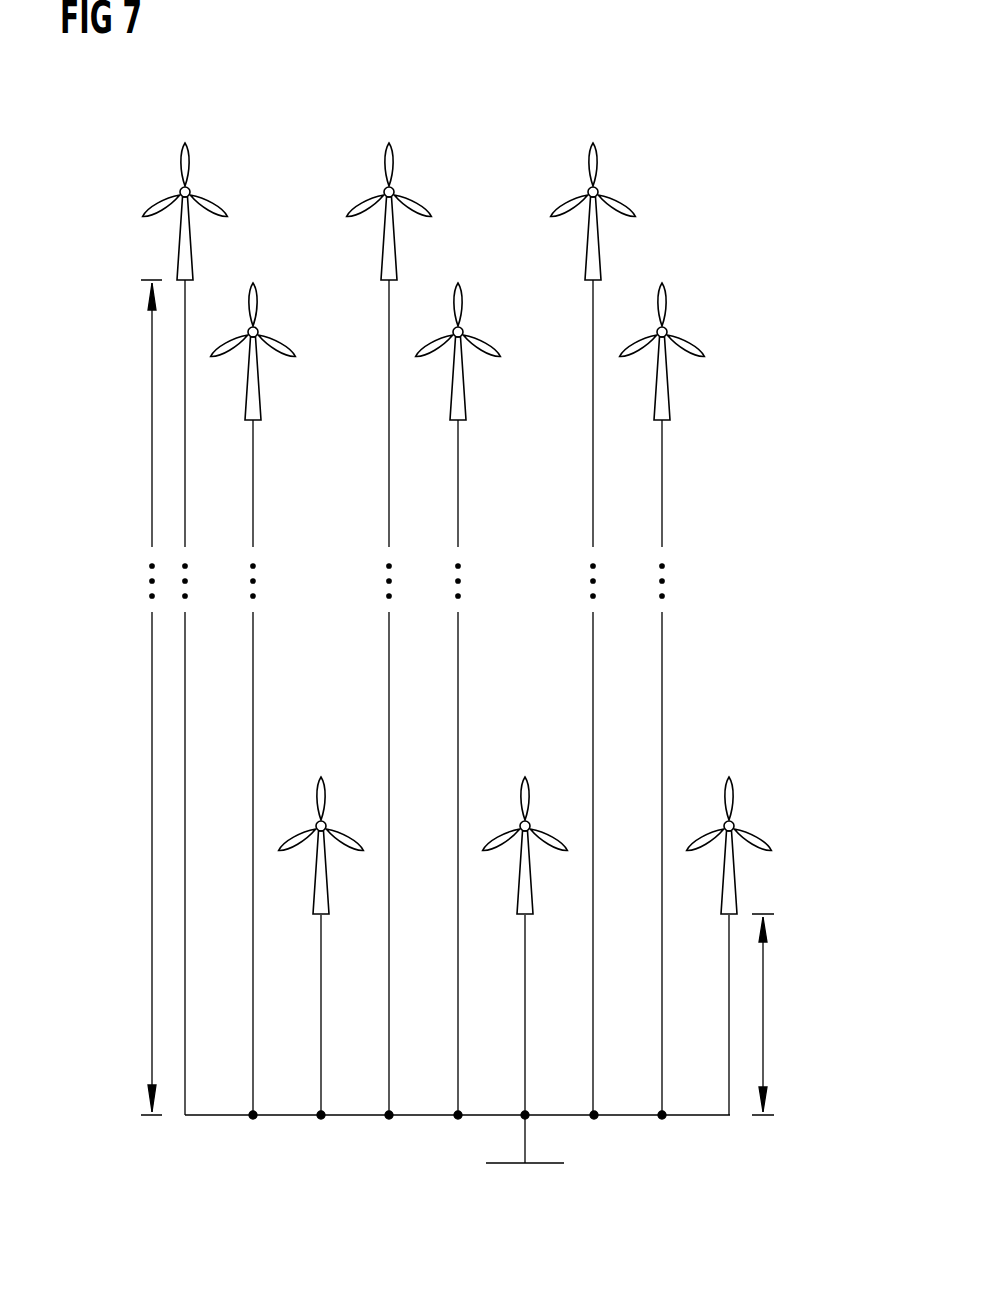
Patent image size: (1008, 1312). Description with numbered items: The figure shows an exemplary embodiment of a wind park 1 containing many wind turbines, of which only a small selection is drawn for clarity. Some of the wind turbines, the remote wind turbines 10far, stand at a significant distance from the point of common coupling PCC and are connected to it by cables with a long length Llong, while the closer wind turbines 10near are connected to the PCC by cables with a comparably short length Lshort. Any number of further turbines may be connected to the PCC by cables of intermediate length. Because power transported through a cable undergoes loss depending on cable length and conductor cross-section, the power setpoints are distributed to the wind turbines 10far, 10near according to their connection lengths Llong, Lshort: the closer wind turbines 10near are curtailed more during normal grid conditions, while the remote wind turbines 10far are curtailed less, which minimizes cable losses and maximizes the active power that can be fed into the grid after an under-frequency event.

The wind park 1 is at (745, 118).
The remote wind turbines 10far is at (433, 273).
The closer wind turbines 10near is at (524, 808).
The point of common coupling PCC is at (510, 1166).
The long cable length Llong is at (150, 698).
The short cable length Lshort is at (766, 1015).